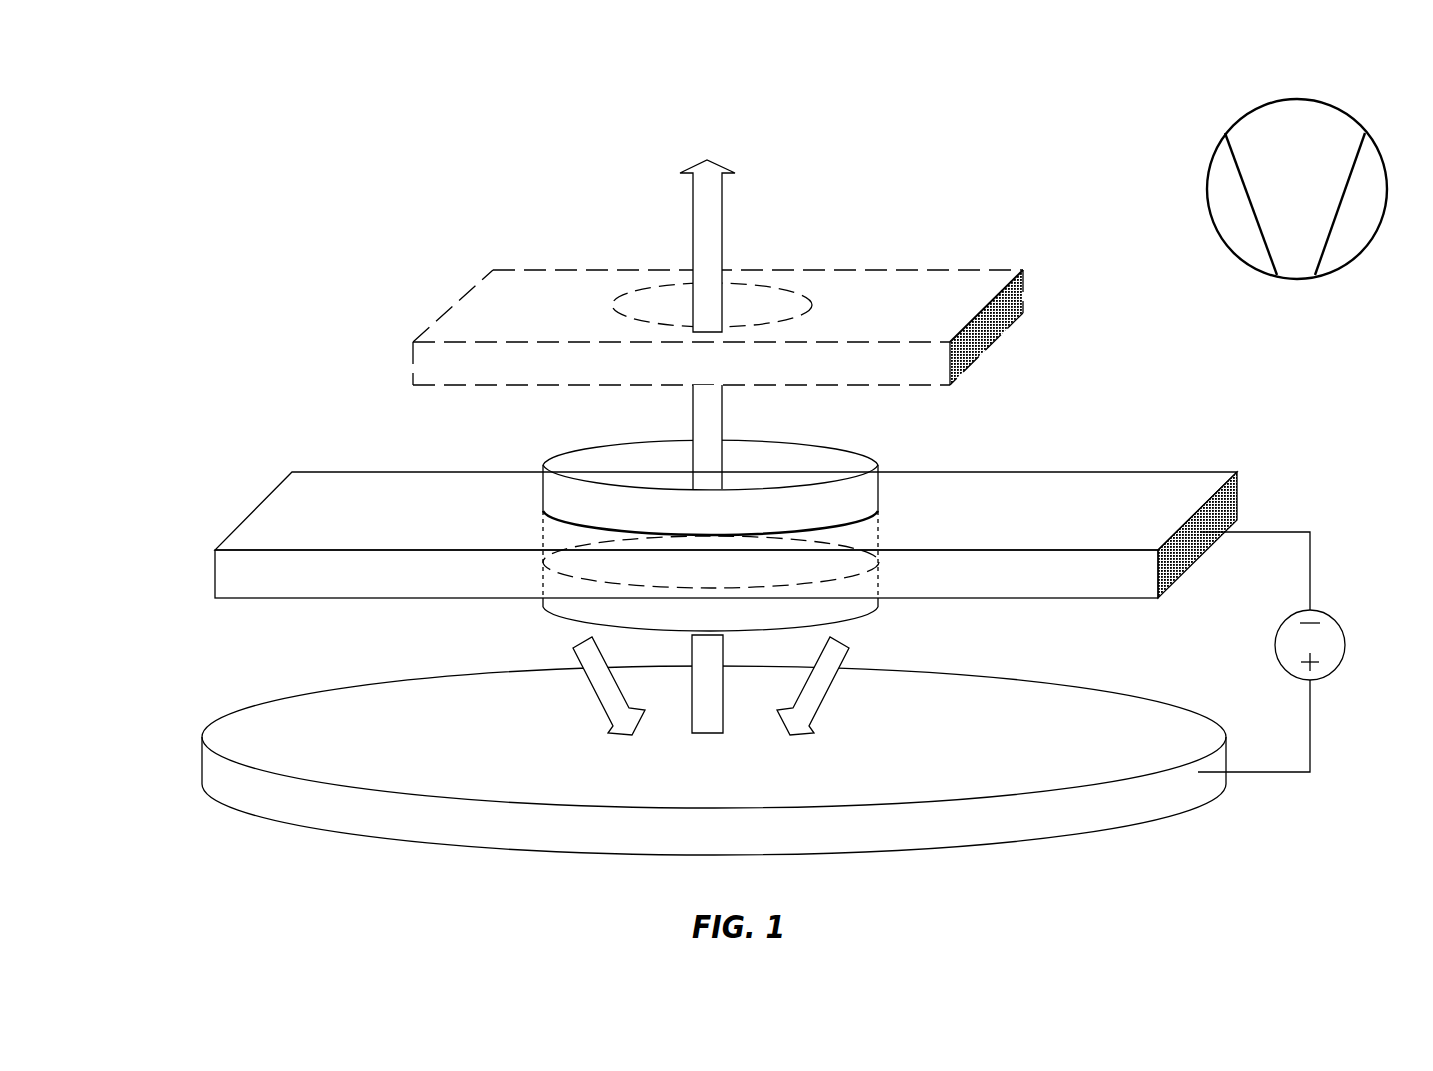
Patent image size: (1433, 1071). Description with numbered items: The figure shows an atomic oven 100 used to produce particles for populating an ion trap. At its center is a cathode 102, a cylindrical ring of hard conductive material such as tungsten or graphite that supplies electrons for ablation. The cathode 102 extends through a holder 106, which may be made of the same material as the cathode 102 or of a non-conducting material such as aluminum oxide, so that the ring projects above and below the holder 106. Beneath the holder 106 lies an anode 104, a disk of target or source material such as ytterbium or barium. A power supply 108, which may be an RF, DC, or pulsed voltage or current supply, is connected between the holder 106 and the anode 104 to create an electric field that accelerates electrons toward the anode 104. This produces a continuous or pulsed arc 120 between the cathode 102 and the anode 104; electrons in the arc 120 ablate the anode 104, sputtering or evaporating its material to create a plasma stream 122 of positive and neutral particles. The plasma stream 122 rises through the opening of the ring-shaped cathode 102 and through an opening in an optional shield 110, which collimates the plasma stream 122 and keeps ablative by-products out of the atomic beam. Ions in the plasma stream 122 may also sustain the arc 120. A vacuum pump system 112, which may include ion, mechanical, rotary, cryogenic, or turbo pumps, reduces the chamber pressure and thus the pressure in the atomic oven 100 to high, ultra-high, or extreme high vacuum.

The atomic oven 100 is at (138, 111).
The cathode 102 is at (547, 468).
The anode 104 is at (202, 738).
The holder 106 is at (292, 472).
The power supply 108 is at (1363, 590).
The shield 110 is at (452, 305).
The vacuum pump system 112 is at (1207, 178).
The arc 120 is at (539, 643).
The plasma stream 122 is at (653, 207).